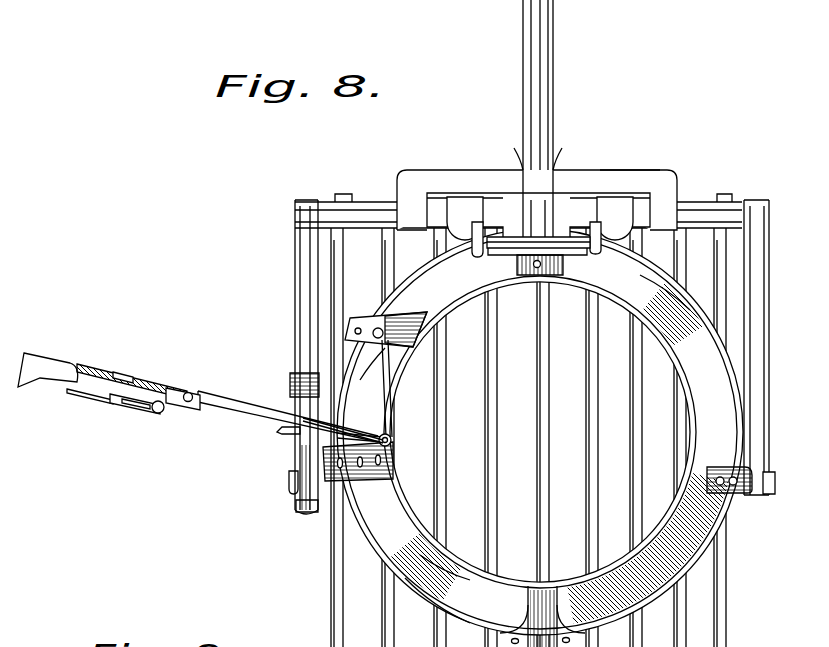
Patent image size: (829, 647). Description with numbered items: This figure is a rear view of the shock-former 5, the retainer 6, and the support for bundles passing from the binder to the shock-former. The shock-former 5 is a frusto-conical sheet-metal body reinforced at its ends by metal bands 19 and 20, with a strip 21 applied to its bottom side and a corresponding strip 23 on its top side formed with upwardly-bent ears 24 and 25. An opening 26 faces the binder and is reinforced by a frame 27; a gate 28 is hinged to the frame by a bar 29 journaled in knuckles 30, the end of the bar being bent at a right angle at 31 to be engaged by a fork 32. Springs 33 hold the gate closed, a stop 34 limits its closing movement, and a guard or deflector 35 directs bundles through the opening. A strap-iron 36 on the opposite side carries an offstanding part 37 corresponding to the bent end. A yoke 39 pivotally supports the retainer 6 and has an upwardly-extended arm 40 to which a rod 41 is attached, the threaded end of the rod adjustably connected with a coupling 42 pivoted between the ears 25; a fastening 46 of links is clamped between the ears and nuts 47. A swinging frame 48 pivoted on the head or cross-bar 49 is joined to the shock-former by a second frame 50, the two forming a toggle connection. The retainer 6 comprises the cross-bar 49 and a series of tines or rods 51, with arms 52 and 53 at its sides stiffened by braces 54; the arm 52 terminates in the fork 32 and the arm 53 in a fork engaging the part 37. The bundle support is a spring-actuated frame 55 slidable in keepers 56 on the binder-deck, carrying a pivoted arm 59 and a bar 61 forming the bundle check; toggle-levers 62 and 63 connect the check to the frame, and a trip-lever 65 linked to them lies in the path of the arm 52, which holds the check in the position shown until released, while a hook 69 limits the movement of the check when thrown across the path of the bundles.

The shock-former 5 is at (540, 432).
The retainer 6 is at (518, 203).
The metal band 19 is at (478, 618).
The metal band 20 is at (480, 552).
The strip 21 is at (542, 616).
The strip 23 is at (566, 264).
The ear 24 is at (487, 258).
The ears 25 is at (482, 206).
The opening 26 is at (372, 439).
The frame 27 is at (386, 320).
The gate 28 is at (360, 425).
The bar 29 is at (392, 438).
The knuckles 30 is at (392, 442).
The bent end 31 is at (288, 478).
The fork 32 is at (304, 512).
The springs 33 is at (290, 440).
The stop 34 is at (262, 412).
The guard or deflector 35 is at (390, 360).
The strap-iron 36 is at (738, 498).
The offstanding part 37 is at (774, 492).
The yoke 39 is at (630, 157).
The arm 40 is at (557, 30).
The rod 41 is at (557, 88).
The coupling 42 is at (510, 165).
The fastening 46 is at (538, 221).
The nuts 47 is at (588, 202).
The swinging frame 48 is at (626, 204).
The head or cross-bar 49 is at (707, 198).
The second frame 50 is at (660, 306).
The tines or rods 51 is at (382, 262).
The arm 52 is at (294, 318).
The arm 53 is at (768, 320).
The braces 54 is at (376, 360).
The spring-actuated frame 55 is at (98, 373).
The keepers 56 is at (60, 345).
The arm 59 is at (212, 410).
The bar 61 is at (343, 422).
The toggle-lever 62 is at (136, 414).
The toggle-lever 63 is at (92, 403).
The trip-lever 65 is at (290, 385).
The hook 69 is at (130, 378).